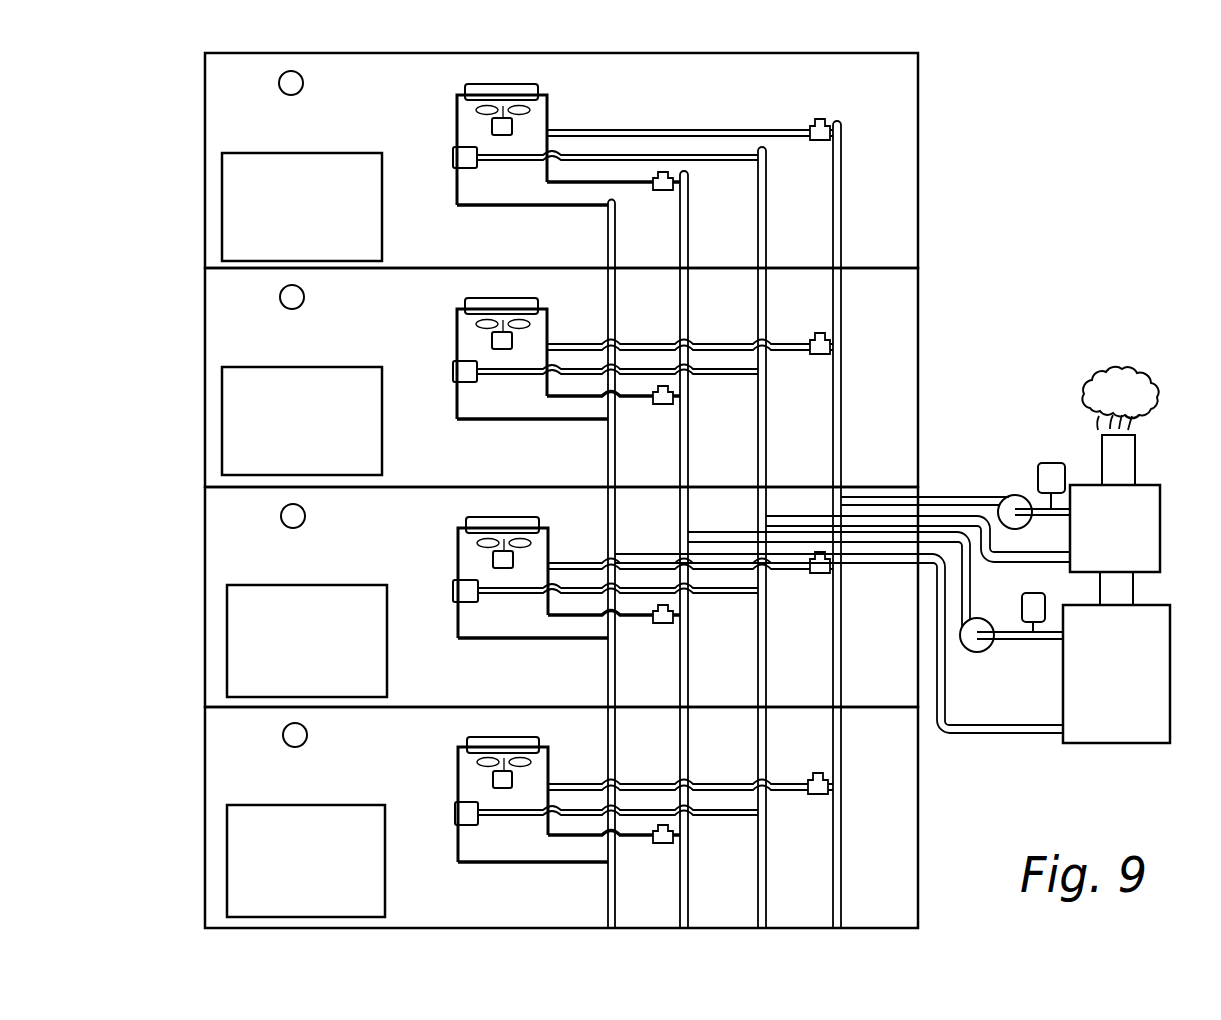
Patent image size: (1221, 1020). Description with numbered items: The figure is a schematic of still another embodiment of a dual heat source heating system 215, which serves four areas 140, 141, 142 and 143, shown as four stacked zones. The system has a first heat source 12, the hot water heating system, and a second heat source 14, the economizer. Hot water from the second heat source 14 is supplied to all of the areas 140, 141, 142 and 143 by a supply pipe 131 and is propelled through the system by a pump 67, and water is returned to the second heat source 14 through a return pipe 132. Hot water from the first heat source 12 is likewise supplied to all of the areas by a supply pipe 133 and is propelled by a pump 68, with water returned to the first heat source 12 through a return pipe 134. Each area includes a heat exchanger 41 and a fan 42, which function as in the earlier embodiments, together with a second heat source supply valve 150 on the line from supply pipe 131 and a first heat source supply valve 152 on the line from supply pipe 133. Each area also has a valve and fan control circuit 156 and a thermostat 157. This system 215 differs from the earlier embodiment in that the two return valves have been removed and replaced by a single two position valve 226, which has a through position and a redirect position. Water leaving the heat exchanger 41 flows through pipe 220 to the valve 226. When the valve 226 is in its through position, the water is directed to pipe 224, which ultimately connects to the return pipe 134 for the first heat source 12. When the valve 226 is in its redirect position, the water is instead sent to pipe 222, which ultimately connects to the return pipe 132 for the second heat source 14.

The first heat source 12 is at (1160, 673).
The second heat source 14 is at (1152, 537).
The heat exchanger 41 is at (520, 86).
The fan 42 is at (498, 136).
The pump 67 is at (1016, 494).
The pump 68 is at (983, 651).
The supply pipe 131 is at (843, 250).
The return pipe 132 is at (768, 250).
The supply pipe 133 is at (690, 250).
The return pipe 134 is at (616, 250).
The area 140 is at (216, 121).
The area 141 is at (216, 347).
The area 142 is at (216, 621).
The area 143 is at (216, 802).
The second heat source supply valve 150 is at (812, 101).
The first heat source supply valve 152 is at (668, 190).
The valve and fan control circuit 156 is at (380, 250).
The thermostat 157 is at (300, 81).
The dual heat source heating system 215 is at (952, 201).
The pipe 220 is at (457, 120).
The pipe 222 is at (671, 156).
The pipe 224 is at (555, 210).
The two position valve 226 is at (455, 161).